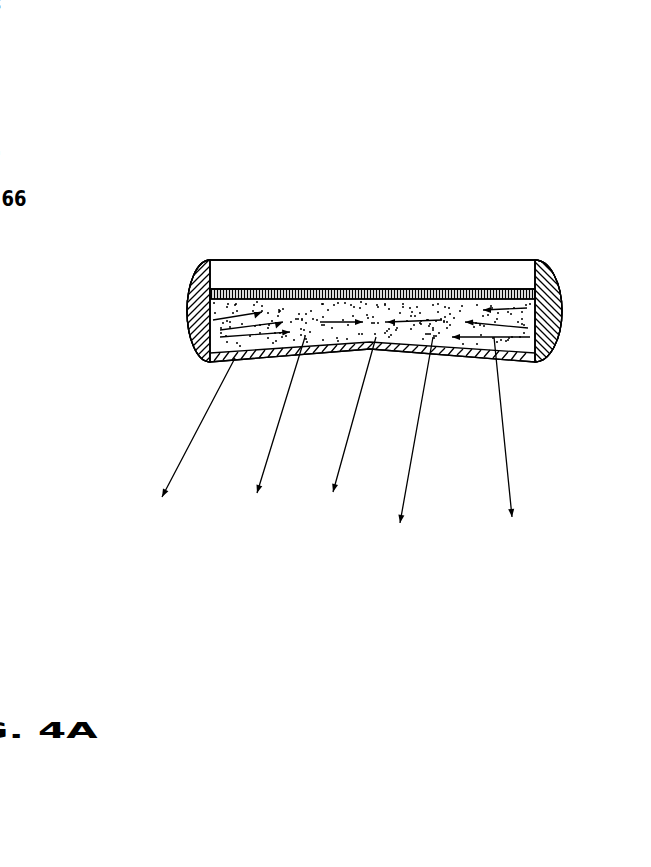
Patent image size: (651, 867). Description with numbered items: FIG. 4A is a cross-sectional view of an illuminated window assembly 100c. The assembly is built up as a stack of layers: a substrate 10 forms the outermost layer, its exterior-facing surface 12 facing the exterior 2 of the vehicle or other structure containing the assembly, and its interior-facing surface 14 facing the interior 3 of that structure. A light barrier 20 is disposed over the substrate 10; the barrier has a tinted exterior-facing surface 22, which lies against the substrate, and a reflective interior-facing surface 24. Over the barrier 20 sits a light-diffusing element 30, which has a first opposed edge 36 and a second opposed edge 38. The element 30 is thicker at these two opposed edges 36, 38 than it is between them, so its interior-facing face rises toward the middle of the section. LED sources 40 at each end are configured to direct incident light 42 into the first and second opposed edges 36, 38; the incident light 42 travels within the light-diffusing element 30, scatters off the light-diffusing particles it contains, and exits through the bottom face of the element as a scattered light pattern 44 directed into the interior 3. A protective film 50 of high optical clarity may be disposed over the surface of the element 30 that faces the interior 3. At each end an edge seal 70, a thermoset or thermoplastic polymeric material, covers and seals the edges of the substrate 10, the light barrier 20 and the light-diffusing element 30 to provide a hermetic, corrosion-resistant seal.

The illuminated window assembly 100c is at (497, 146).
The exterior 2 is at (432, 195).
The interior 3 is at (306, 444).
The substrate 10 is at (503, 270).
The exterior-facing surface 12 is at (463, 257).
The interior-facing surface 14 is at (440, 352).
The light barrier 20 is at (273, 289).
The tinted exterior-facing surface 22 is at (296, 287).
The reflective interior-facing surface 24 is at (308, 307).
The light-diffusing element 30 is at (559, 303).
The first opposed edge 36 is at (510, 358).
The second opposed edge 38 is at (232, 290).
The LED source 40 is at (558, 332).
The incident light 42 is at (288, 338).
The scattered light pattern 44 is at (182, 457).
The protective film 50 is at (215, 367).
The edge seal 70 is at (550, 273).